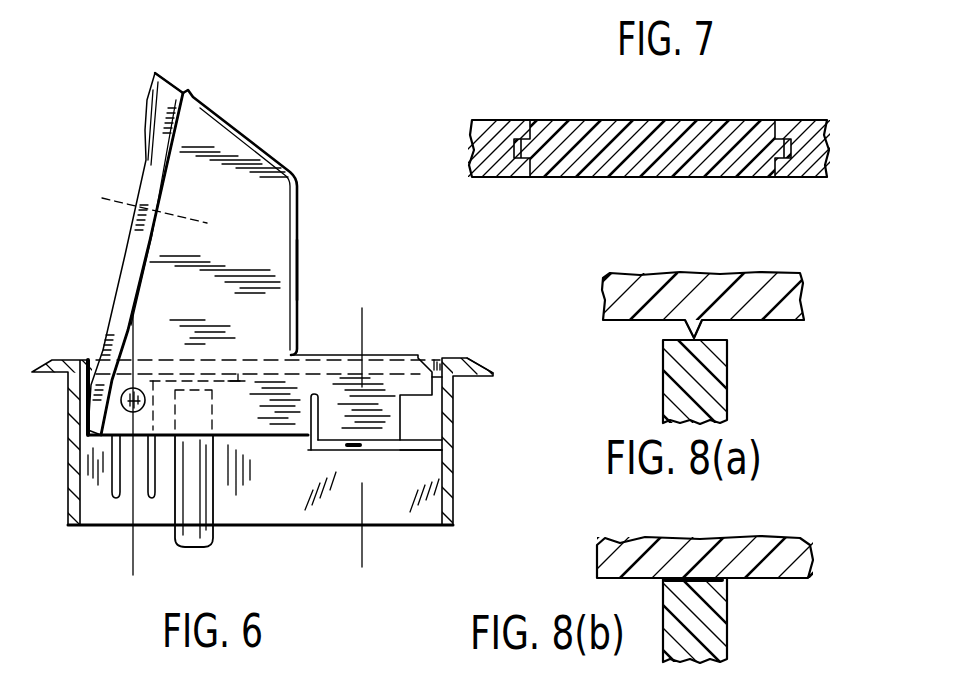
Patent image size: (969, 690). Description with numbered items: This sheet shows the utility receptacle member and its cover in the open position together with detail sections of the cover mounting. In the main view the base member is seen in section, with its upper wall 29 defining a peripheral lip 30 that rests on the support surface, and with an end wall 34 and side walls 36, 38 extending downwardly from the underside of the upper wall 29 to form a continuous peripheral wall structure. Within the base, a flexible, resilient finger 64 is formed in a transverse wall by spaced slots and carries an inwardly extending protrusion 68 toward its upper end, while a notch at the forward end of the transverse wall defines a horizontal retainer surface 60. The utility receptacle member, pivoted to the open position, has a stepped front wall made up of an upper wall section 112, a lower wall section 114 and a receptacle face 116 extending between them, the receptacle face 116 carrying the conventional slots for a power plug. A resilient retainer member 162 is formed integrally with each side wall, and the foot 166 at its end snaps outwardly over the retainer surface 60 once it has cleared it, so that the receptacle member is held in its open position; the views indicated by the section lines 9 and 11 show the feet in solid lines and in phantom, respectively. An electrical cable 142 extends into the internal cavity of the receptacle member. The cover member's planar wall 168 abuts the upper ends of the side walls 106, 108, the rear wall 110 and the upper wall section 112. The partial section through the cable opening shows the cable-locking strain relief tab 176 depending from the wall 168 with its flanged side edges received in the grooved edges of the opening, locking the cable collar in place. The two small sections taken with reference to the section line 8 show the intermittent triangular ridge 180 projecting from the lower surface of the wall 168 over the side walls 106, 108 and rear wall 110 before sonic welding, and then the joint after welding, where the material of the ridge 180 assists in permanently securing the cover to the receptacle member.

In FIG. 6, the upper wall section 112 is at (252, 147).
In FIG. 8a, the upper wall section 112 is at (727, 386).
In FIG. 8b, the upper wall section 112 is at (727, 621).
In FIG. 6, the receptacle face 116 is at (299, 256).
In FIG. 6, the planar wall 168 is at (122, 277).
In FIG. 8a, the planar wall 168 is at (703, 297).
In FIG. 8b, the planar wall 168 is at (733, 537).
In FIG. 6, the lower wall section 114 is at (380, 352).
In FIG. 6, the retainer member 162 is at (385, 407).
In FIG. 6, the foot 166 is at (435, 446).
In FIG. 6, the retainer surface 60 is at (423, 455).
In FIG. 6, the protrusion 68 is at (128, 401).
In FIG. 6, the finger 64 is at (127, 468).
In FIG. 6, the electrical cable 142 is at (213, 531).
In FIG. 6, the side wall 38 is at (68, 455).
In FIG. 6, the side wall 36 is at (454, 485).
In FIG. 6, the upper wall 29 is at (445, 360).
In FIG. 6, the peripheral lip 30 is at (493, 375).
In FIG. 6, the end wall 34 is at (397, 513).
In FIG. 6, the section line 8— 8 is at (108, 165).
In FIG. 6, the section line 9— 9 is at (83, 322).
In FIG. 6, the section line 11— 11 is at (403, 320).
In FIG. 7, the rear wall 110 is at (497, 118).
In FIG. 8a, the rear wall 110 is at (746, 392).
In FIG. 8b, the rear wall 110 is at (744, 602).
In FIG. 7, the cable-locking strain relief tab 176 is at (711, 117).
In FIG. 8a, the triangular ridge 180 is at (703, 330).
In FIG. 8a, the side wall 106 is at (746, 392).
In FIG. 8b, the side wall 106 is at (744, 602).
In FIG. 8a, the side wall 108 is at (746, 392).
In FIG. 8b, the side wall 108 is at (744, 602).